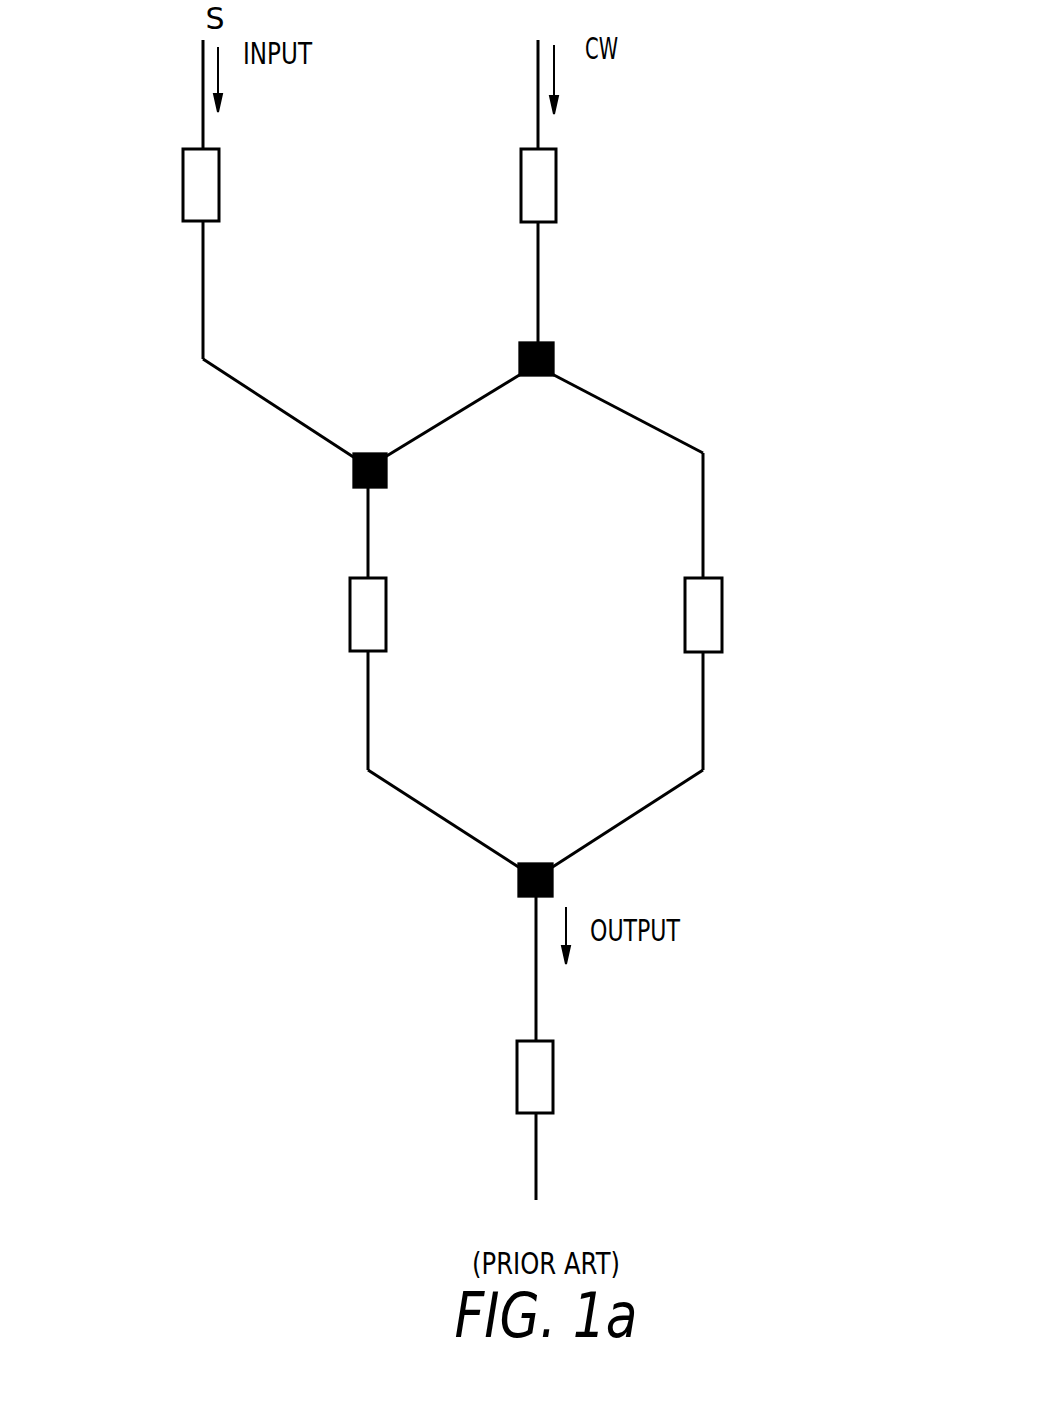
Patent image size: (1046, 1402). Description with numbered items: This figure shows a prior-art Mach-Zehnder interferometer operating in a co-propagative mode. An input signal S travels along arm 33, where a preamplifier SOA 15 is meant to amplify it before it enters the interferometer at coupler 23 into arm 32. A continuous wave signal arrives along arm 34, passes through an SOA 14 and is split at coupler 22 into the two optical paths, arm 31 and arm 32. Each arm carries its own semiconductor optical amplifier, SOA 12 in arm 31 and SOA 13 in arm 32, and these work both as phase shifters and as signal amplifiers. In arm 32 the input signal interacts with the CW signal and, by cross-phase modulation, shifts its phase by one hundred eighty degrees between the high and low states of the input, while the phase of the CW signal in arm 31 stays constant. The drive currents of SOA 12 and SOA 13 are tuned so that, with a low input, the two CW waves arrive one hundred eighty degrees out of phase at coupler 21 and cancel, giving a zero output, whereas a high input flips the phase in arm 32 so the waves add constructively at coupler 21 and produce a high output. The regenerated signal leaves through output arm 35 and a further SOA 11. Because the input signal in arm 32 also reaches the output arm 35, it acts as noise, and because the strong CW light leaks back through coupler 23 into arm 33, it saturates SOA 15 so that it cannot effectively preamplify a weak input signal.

The SOA 11 is at (537, 1072).
The semiconductor optical amplifier 12 is at (722, 633).
The semiconductor optical amplifier 13 is at (357, 650).
The SOA 14 is at (545, 167).
The preamplifier SOA 15 is at (210, 191).
The coupler 21 is at (538, 863).
The coupler 22 is at (554, 355).
The coupler 23 is at (376, 453).
The arm 31 is at (703, 503).
The arm 32 is at (370, 527).
The arm 33 is at (280, 412).
The arm 34 is at (538, 258).
The output arm 35 is at (535, 970).